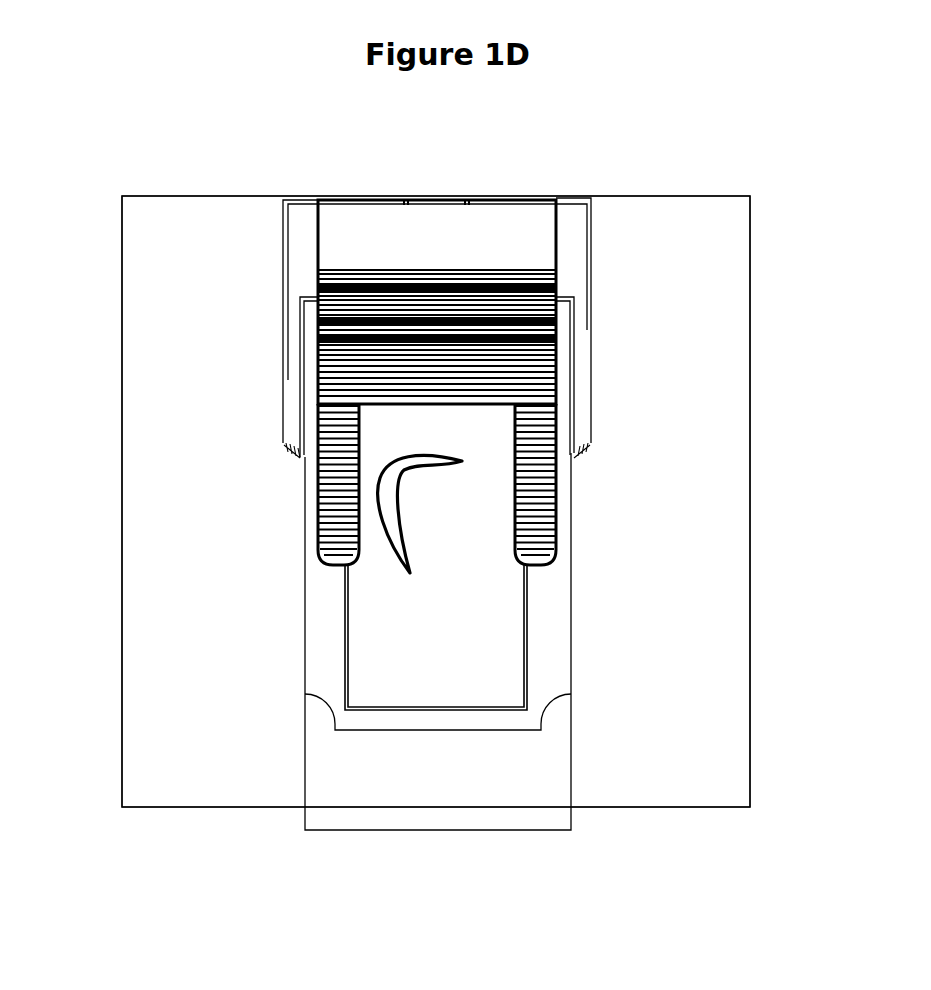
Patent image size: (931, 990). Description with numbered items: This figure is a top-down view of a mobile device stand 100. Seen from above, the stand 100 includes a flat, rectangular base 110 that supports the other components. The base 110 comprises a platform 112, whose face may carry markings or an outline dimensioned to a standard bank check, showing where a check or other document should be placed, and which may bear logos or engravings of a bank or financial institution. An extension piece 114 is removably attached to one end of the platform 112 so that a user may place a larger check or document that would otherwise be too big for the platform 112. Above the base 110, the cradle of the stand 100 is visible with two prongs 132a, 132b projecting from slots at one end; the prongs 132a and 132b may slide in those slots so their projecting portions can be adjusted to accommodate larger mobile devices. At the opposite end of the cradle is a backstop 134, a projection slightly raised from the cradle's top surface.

The mobile device stand 100 is at (705, 132).
The base 110 is at (135, 745).
The platform 112 is at (548, 645).
The extension piece 114 is at (495, 820).
The prong 132a is at (315, 497).
The prong 132b is at (560, 520).
The backstop 134 is at (407, 230).